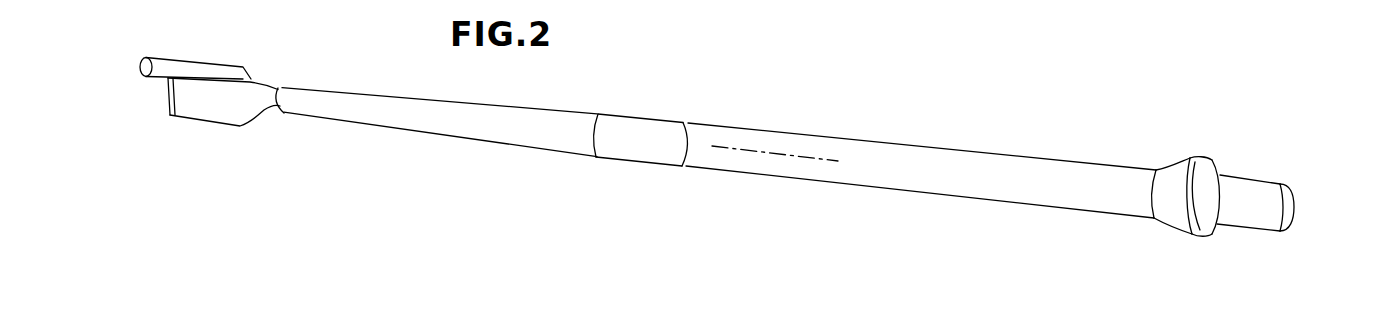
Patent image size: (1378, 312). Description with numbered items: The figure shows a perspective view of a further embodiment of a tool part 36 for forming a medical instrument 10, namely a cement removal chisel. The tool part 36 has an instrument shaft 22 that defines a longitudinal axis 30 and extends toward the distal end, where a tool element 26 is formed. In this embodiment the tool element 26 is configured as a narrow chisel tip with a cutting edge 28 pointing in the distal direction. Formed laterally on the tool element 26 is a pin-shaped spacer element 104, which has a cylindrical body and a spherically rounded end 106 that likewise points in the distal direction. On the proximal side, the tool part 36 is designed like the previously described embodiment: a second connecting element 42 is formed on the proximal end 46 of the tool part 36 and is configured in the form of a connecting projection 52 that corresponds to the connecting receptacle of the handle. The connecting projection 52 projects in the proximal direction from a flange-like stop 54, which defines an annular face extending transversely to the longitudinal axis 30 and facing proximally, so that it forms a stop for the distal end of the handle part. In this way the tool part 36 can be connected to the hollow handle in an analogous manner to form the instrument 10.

The instrument 10 is at (935, 127).
The instrument shaft 22 is at (704, 123).
The tool element 26 is at (217, 103).
The cutting edge 28 is at (168, 97).
The longitudinal axis 30 is at (760, 148).
The tool part 36 is at (695, 167).
The second connecting element 42 is at (1257, 231).
The proximal end 46 is at (1297, 203).
The connecting projection 52 is at (1243, 178).
The flange-like stop 54 is at (1200, 228).
The spacer element 104 is at (187, 72).
The spherically rounded end 106 is at (142, 67).